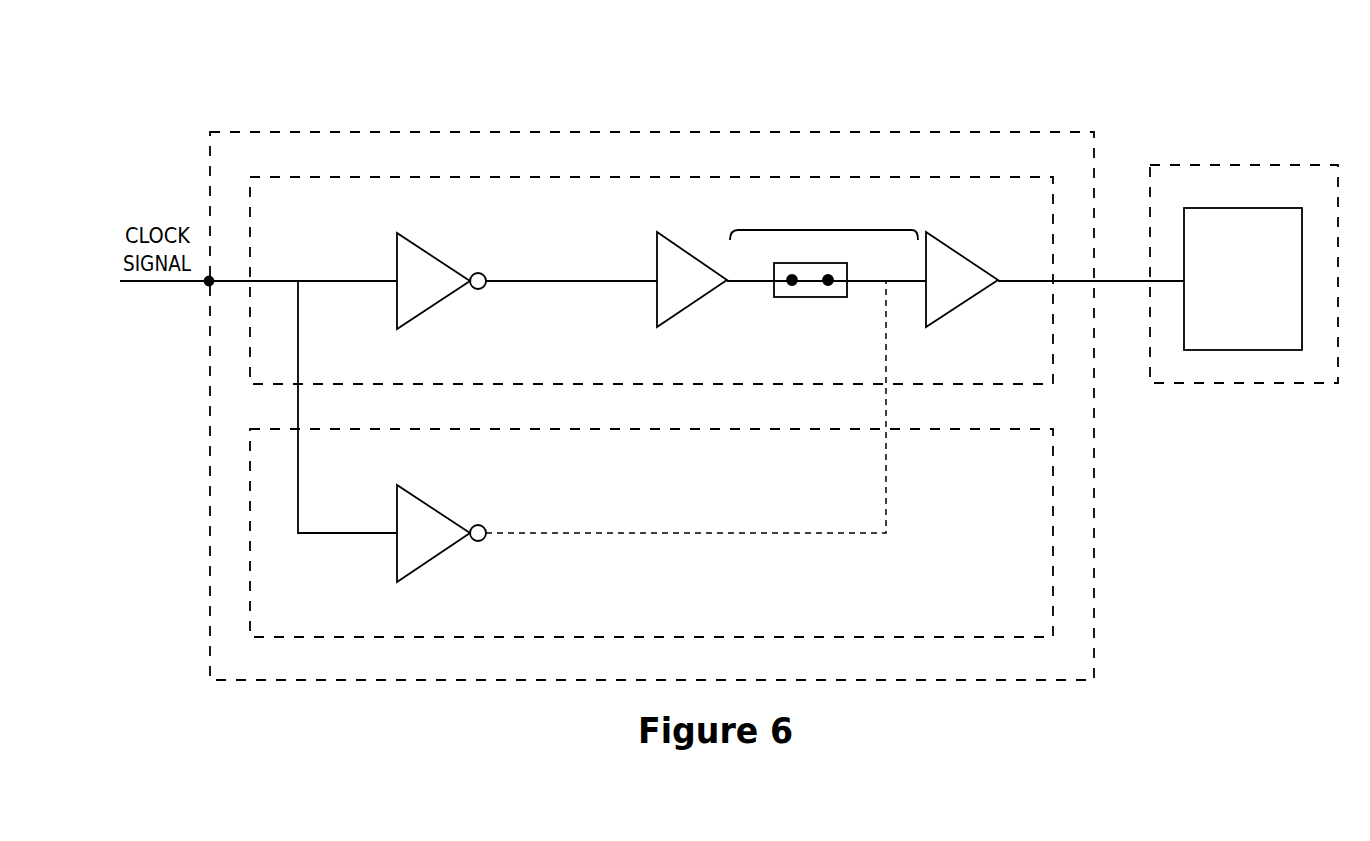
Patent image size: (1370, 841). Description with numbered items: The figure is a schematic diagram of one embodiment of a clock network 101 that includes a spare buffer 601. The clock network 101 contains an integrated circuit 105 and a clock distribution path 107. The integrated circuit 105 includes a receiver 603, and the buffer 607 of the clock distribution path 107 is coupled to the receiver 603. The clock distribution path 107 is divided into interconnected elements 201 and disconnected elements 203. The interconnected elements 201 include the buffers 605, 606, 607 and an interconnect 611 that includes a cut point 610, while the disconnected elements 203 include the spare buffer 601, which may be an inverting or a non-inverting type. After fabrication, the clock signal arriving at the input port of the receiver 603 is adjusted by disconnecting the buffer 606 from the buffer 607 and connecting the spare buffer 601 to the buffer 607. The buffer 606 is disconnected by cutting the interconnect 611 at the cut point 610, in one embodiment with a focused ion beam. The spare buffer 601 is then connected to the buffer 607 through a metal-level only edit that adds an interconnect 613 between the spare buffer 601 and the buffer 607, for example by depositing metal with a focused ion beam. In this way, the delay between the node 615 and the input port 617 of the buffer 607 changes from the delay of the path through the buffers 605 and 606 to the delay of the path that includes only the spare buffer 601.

The clock network 101 is at (1130, 97).
The integrated circuit 105 is at (1252, 165).
The clock distribution path 107 is at (976, 131).
The interconnected elements 201 is at (937, 177).
The disconnected elements 203 is at (937, 429).
The spare buffer 601 is at (435, 556).
The receiver 603 is at (1252, 208).
The buffer 605 is at (437, 310).
The buffer 606 is at (691, 302).
The buffer 607 is at (963, 302).
The cut point 610 is at (812, 297).
The interconnect 611 is at (825, 230).
The interconnect 613 is at (686, 532).
The node 615 is at (206, 286).
The input port 617 is at (925, 278).